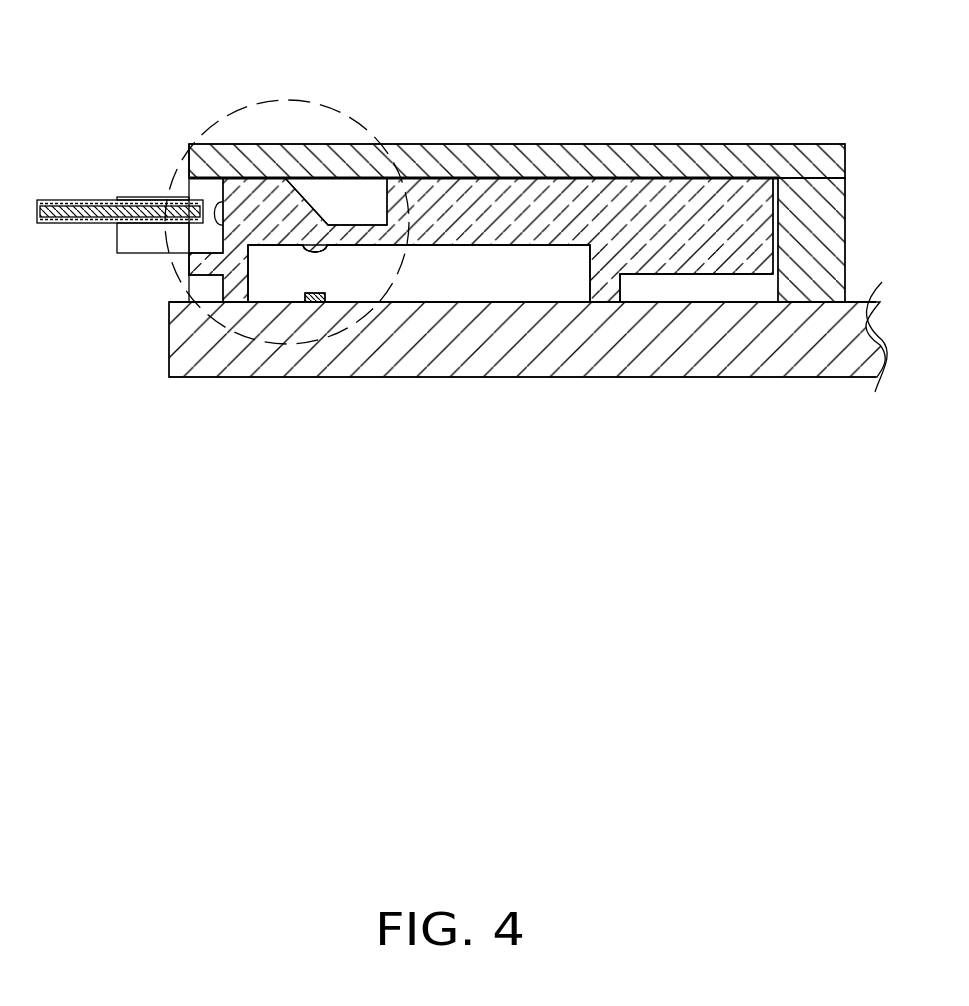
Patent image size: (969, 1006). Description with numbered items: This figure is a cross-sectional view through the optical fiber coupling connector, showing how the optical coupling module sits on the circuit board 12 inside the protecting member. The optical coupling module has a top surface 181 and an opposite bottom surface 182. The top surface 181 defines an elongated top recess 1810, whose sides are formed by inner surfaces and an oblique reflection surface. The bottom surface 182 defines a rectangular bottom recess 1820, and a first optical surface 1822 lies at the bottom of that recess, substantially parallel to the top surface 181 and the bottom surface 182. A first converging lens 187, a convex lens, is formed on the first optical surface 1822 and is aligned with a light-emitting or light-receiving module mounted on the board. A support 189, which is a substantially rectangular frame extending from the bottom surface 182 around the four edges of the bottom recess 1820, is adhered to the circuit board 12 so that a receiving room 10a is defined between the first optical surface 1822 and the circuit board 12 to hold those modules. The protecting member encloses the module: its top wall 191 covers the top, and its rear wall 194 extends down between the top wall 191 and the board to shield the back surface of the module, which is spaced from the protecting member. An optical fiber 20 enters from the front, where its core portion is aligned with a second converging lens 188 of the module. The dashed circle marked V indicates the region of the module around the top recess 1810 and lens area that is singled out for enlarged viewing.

The optical fiber 20 is at (72, 200).
The second converging lens 188 is at (219, 207).
The top recess 1810 is at (342, 202).
The enlarged view region V is at (325, 105).
The top surface 181 is at (497, 177).
The top wall 191 is at (600, 165).
The rear wall 194 is at (805, 228).
The first converging lens 187 is at (307, 247).
The receiving room 10a is at (397, 293).
The bottom recess 1820 is at (434, 273).
The first optical surface 1822 is at (483, 247).
The circuit board 12 is at (540, 338).
The support 189 is at (608, 287).
The bottom surface 182 is at (733, 275).